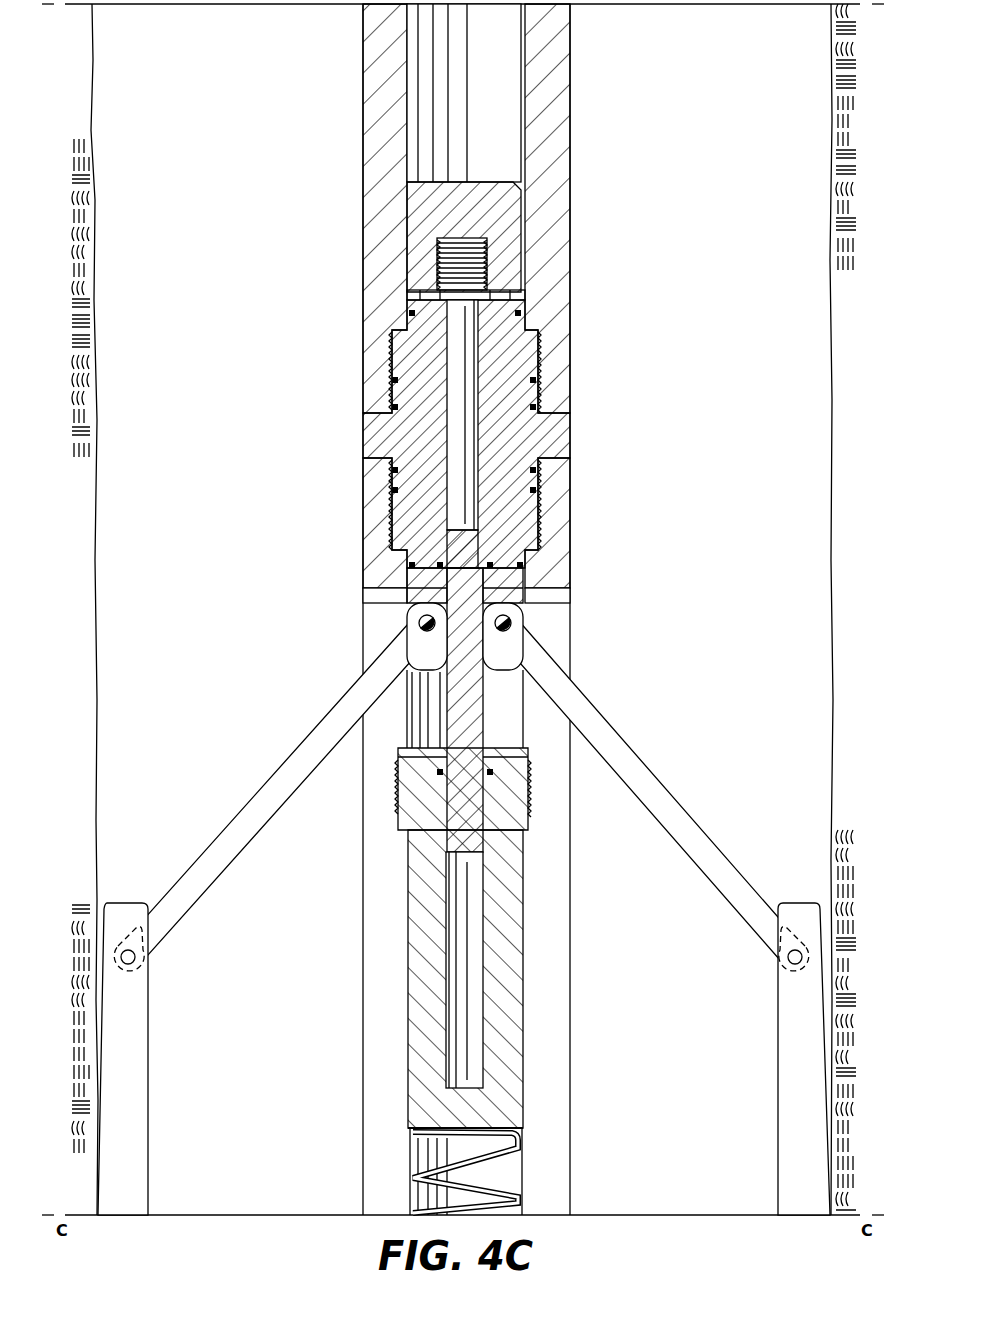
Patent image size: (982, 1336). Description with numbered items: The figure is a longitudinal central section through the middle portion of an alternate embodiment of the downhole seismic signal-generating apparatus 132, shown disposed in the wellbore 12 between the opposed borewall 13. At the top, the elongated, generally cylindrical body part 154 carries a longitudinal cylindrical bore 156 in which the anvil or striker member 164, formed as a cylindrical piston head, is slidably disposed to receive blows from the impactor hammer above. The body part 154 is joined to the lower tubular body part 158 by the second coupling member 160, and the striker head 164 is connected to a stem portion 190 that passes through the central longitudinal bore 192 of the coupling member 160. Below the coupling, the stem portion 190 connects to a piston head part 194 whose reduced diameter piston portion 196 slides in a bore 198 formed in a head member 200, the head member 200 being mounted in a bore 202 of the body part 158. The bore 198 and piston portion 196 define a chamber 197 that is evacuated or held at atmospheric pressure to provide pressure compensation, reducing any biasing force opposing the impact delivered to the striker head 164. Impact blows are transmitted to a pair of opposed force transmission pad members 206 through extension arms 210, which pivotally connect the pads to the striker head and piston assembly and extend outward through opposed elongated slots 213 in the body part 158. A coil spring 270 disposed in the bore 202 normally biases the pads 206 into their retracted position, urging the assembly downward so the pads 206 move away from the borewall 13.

The wellbore 12 is at (108, 321).
The borewall 13 is at (97, 780).
The downhole seismic signal-generating apparatus 132 is at (582, 254).
The elongated body part 154 is at (565, 68).
The cylindrical bore 156 is at (520, 124).
The tubular body part 158 is at (566, 566).
The second coupling member 160 is at (565, 438).
The striker member 164 is at (522, 230).
The stem portion 190 is at (482, 368).
The central longitudinal bore 192 is at (480, 500).
The piston head part 194 is at (525, 614).
The reduced diameter piston portion 196 is at (490, 828).
The chamber 197 is at (452, 904).
The bore 198 is at (480, 926).
The head member 200 is at (518, 888).
The bore 202 is at (520, 1096).
The force transmission pad members 206 is at (147, 1108).
The extension arms 210 is at (303, 747).
The elongated slots 213 is at (380, 592).
The coil spring 270 is at (520, 1172).